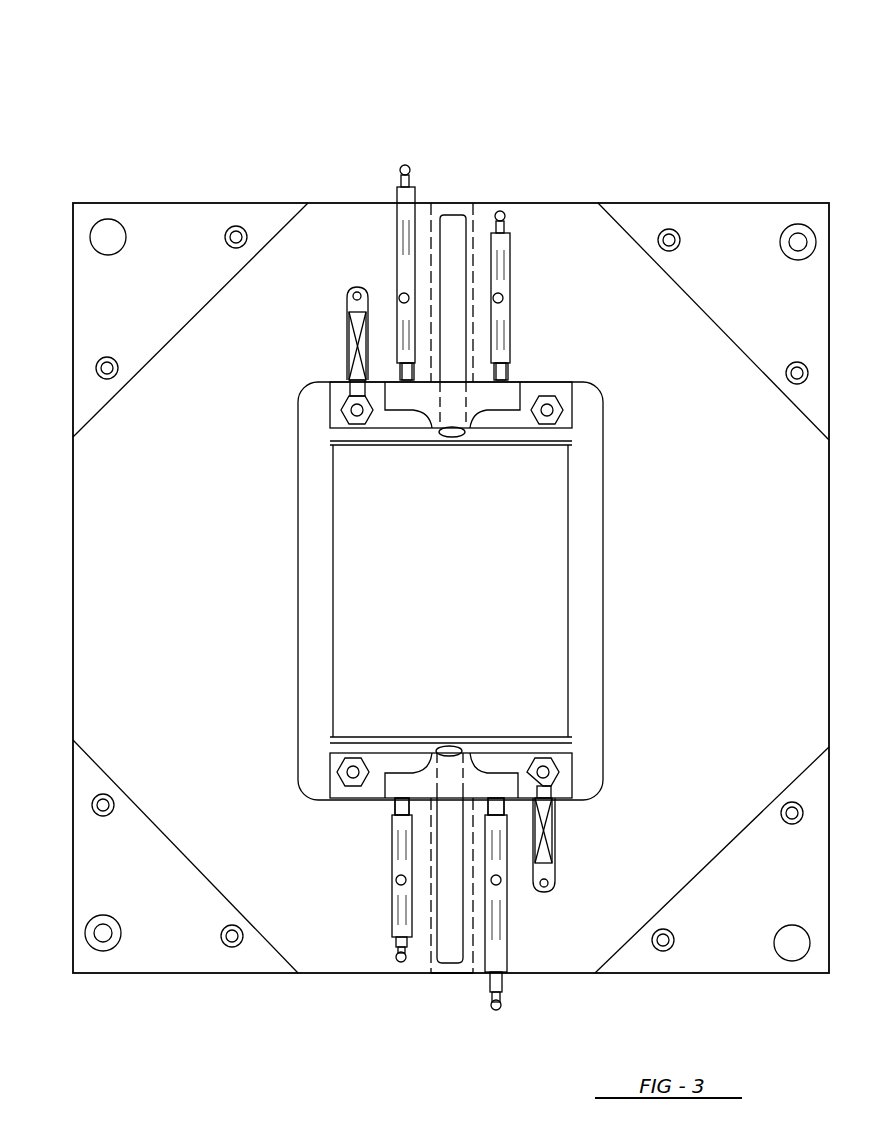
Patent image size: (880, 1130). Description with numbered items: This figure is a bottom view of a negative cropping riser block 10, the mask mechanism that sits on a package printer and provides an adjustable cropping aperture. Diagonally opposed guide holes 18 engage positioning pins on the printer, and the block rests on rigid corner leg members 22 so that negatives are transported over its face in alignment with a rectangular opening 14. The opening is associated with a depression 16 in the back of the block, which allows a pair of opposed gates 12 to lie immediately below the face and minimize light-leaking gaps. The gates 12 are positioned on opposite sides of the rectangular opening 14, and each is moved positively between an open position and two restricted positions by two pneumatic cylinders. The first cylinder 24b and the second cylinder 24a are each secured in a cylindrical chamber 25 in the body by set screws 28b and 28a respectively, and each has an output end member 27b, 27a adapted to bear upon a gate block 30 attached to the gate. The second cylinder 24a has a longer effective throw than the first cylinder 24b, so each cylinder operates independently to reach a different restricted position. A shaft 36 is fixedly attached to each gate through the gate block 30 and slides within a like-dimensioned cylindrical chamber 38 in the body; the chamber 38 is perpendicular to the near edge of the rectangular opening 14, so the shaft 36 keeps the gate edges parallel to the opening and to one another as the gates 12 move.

The negative cropping riser block 10 is at (195, 122).
The gates 12 is at (515, 435).
The rectangular opening 14 is at (447, 588).
The depression 16 is at (318, 540).
The guide holes 18 is at (790, 226).
The corner leg members 22 is at (160, 213).
The second pneumatic cylinder 24a is at (397, 200).
The first pneumatic cylinder 24b is at (508, 232).
The cylindrical chamber 25 is at (418, 203).
The output end member 27a is at (355, 377).
The output end member 27b is at (510, 377).
The set screw 28a is at (402, 296).
The set screw 28b is at (504, 298).
The gate block 30 is at (447, 398).
The shaft 36 is at (452, 215).
The cylindrical chamber 38 is at (440, 973).